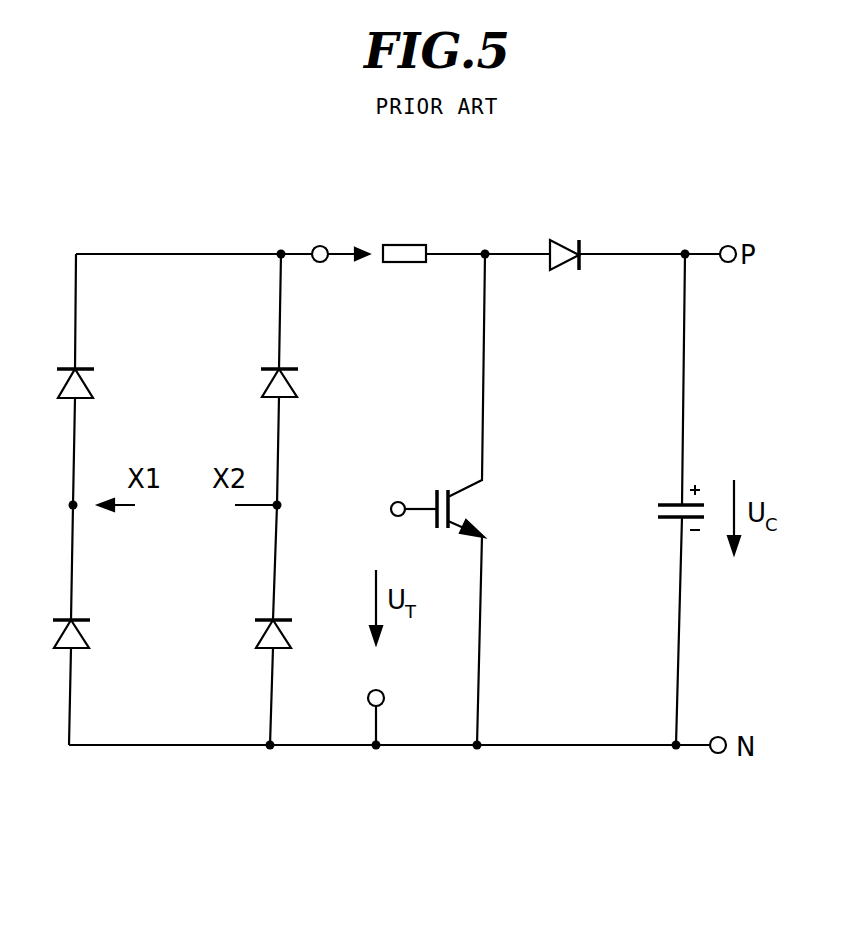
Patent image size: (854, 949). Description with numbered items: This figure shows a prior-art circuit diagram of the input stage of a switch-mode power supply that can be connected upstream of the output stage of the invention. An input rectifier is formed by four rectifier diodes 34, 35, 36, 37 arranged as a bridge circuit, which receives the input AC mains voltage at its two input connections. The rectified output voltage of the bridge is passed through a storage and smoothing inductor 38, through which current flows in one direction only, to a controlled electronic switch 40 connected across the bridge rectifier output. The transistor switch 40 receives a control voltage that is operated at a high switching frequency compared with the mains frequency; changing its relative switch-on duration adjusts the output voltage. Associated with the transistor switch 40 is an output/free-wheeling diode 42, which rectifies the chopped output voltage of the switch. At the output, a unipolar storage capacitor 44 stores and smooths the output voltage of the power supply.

The rectifier diode 34 is at (94, 389).
The rectifier diode 35 is at (90, 638).
The rectifier diode 36 is at (270, 388).
The rectifier diode 37 is at (258, 638).
The storage and smoothing inductor 38 is at (412, 245).
The controlled electronic switch 40 is at (432, 490).
The output/free-wheeling diode 42 is at (572, 248).
The unipolar storage capacitor 44 is at (660, 505).